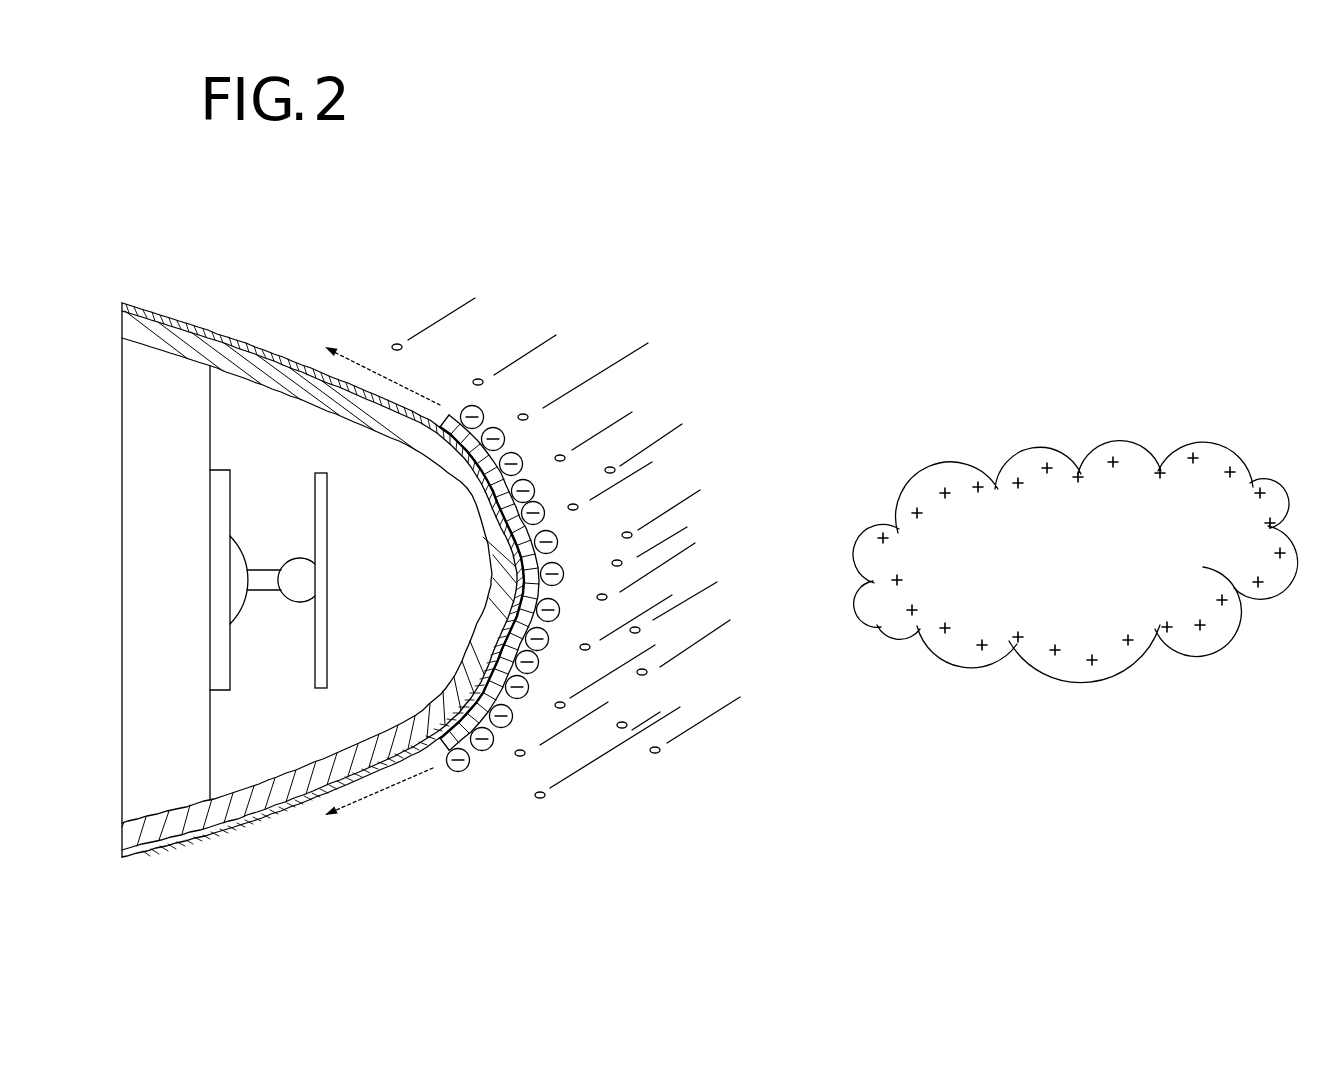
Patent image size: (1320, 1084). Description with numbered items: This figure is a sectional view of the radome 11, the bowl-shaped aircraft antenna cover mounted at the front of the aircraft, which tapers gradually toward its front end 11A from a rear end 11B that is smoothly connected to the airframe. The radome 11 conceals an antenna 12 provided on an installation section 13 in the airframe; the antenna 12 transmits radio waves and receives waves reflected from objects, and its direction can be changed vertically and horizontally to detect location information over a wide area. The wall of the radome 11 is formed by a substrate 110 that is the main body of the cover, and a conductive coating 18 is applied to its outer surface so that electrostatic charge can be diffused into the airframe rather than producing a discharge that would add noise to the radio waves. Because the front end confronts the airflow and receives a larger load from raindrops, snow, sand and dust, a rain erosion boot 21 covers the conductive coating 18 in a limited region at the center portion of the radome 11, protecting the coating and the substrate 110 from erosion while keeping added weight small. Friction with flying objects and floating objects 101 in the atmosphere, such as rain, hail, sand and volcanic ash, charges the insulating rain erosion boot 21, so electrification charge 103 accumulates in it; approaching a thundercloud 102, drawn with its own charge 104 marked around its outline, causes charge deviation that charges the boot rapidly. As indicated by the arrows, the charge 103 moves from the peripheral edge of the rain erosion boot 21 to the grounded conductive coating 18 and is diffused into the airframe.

The radome 11 is at (303, 310).
The front end of the radome 11A is at (545, 718).
The rear end of the radome 11B is at (122, 303).
The substrate 110 is at (172, 316).
The conductive coating 18 is at (226, 335).
The installation section 13 is at (212, 728).
The antenna 12 is at (328, 521).
The rain erosion boot 21 is at (541, 508).
The electrification charge 103 is at (466, 406).
The flying objects and floating objects 101 is at (394, 343).
The thundercloud 102 is at (1222, 440).
The positive charges 104 is at (1047, 460).